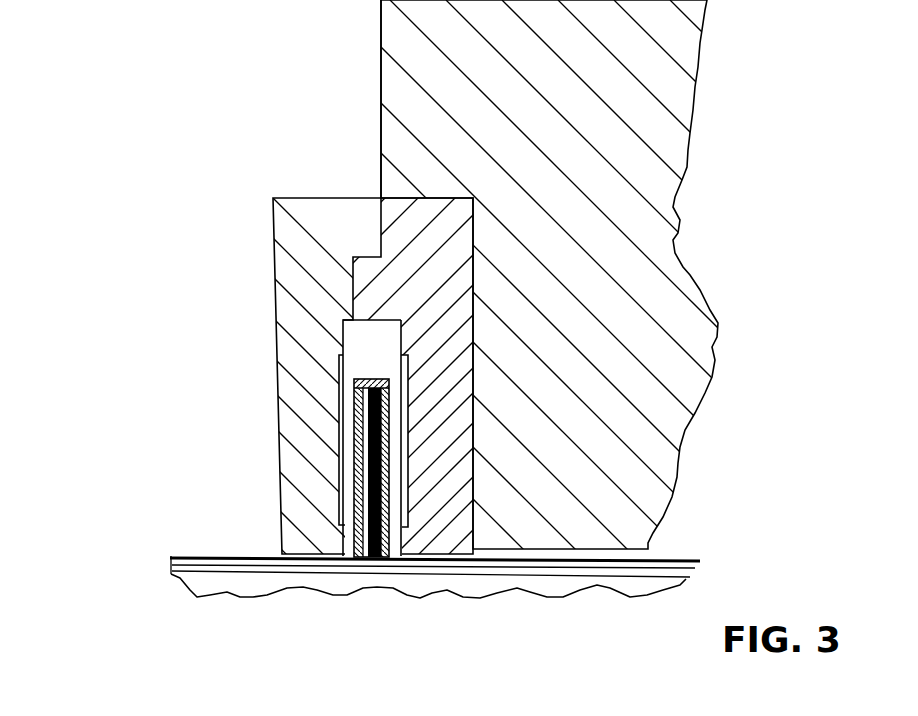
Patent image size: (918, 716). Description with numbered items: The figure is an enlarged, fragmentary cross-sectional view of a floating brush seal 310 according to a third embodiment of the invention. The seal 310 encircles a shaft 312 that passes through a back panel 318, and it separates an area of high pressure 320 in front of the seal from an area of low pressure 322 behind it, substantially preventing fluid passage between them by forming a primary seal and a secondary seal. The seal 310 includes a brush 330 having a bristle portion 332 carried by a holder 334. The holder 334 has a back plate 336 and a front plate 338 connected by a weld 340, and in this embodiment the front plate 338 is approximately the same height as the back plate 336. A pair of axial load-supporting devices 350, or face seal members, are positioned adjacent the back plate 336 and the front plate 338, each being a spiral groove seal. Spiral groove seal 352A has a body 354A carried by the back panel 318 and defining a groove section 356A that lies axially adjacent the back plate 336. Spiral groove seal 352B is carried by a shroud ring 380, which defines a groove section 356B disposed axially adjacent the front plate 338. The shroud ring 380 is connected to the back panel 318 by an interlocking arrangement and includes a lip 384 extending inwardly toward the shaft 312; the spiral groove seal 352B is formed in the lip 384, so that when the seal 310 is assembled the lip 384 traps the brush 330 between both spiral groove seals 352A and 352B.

The floating brush seal 310 is at (155, 475).
The shaft 312 is at (173, 562).
The back panel 318 is at (670, 152).
The area of high pressure 320 is at (98, 243).
The area of low pressure 322 is at (647, 557).
The brush 330 is at (370, 348).
The bristle portion 332 is at (373, 558).
The holder 334 is at (367, 375).
The back plate 336 is at (389, 497).
The front plate 338 is at (347, 523).
The weld 340 is at (354, 388).
The axial load-supporting devices 350 is at (326, 313).
The spiral groove seal 352A is at (473, 278).
The spiral groove seal 352B is at (328, 427).
The body 354A is at (465, 337).
The groove section 356A is at (420, 460).
The groove section 356B is at (333, 468).
The shroud ring 380 is at (292, 198).
The lip 384 is at (277, 320).